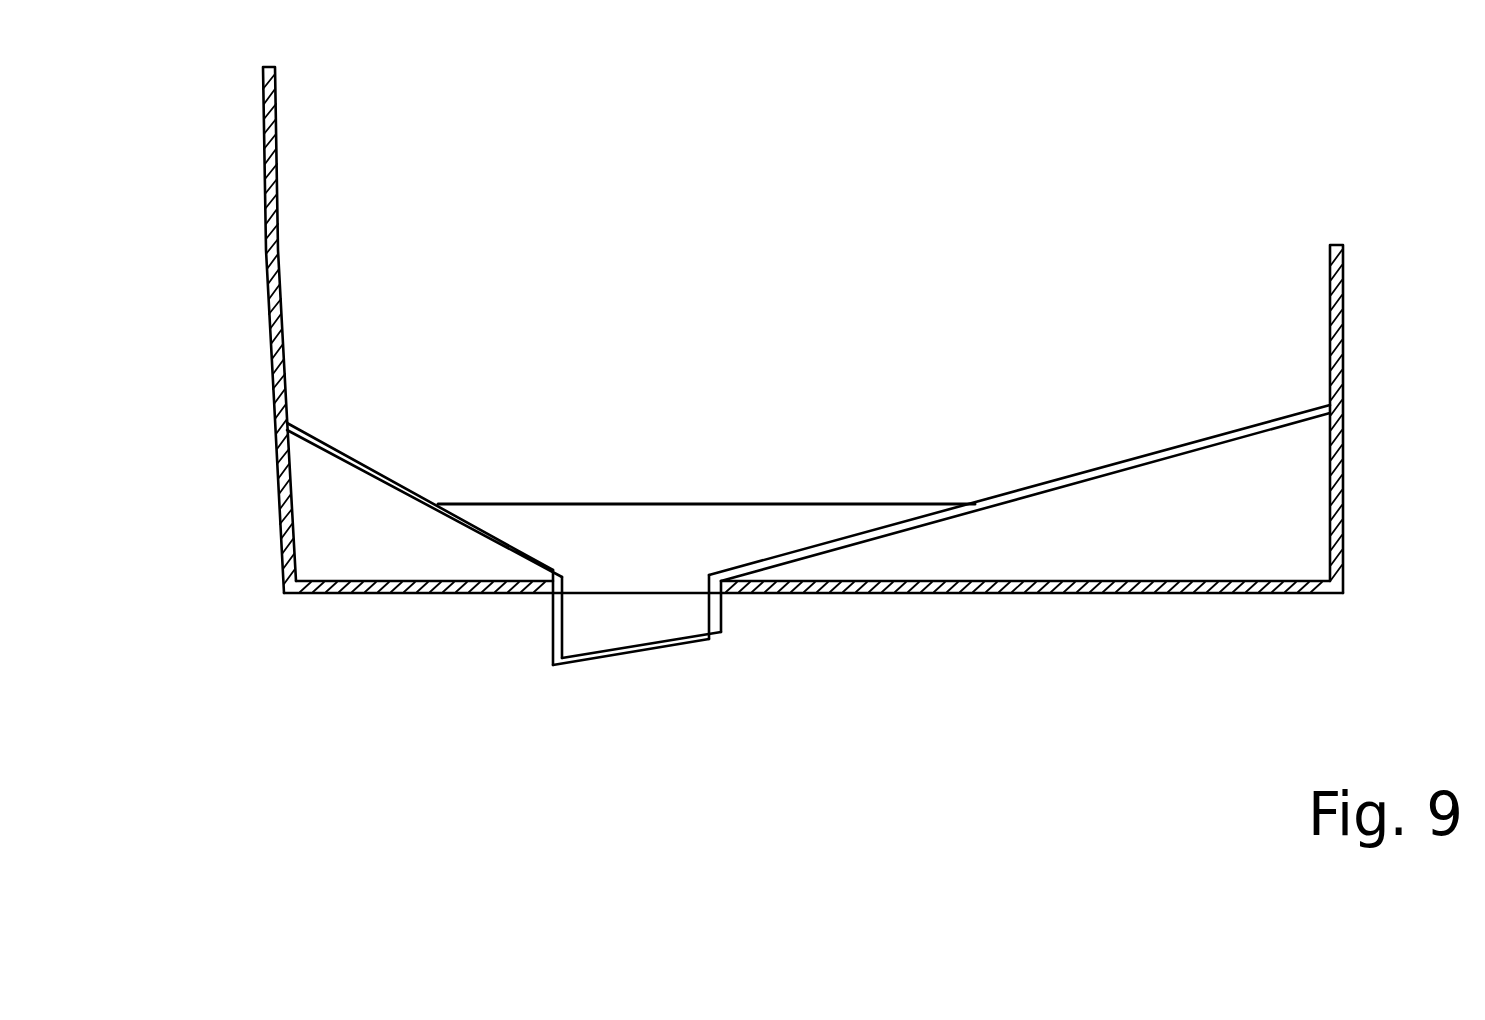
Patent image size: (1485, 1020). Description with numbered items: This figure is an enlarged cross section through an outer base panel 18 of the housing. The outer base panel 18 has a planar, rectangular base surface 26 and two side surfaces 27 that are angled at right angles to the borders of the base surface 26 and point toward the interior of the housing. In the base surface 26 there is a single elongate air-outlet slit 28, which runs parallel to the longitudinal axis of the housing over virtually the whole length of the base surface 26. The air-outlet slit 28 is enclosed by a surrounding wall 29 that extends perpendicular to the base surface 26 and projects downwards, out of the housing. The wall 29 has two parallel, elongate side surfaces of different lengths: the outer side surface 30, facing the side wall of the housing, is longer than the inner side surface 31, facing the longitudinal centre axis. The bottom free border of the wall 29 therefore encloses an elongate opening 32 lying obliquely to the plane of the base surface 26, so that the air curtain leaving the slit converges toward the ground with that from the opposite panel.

The outer base panel 18 is at (811, 421).
The base surface 26 is at (1160, 593).
The side surface 27 is at (268, 325).
The air-outlet slit 28 is at (644, 673).
The surrounding wall 29 is at (550, 607).
The outer side surface 30 is at (550, 633).
The inner side surface 31 is at (722, 613).
The opening 32 is at (600, 660).